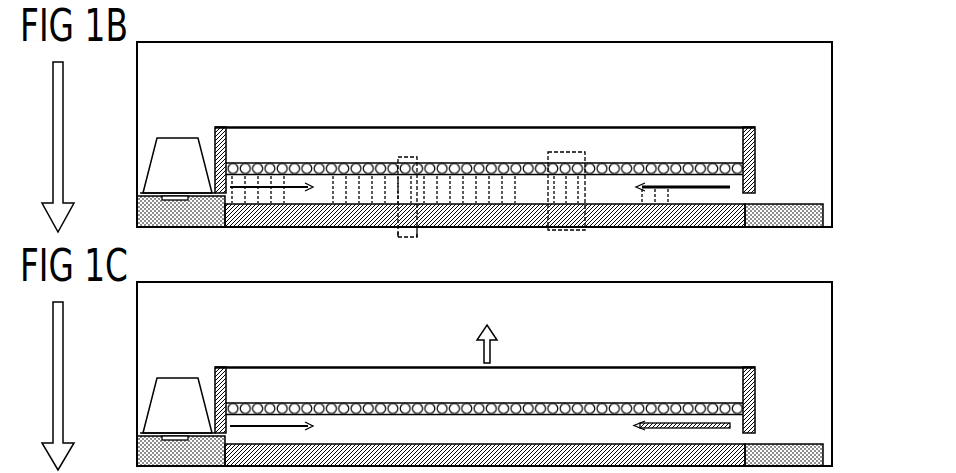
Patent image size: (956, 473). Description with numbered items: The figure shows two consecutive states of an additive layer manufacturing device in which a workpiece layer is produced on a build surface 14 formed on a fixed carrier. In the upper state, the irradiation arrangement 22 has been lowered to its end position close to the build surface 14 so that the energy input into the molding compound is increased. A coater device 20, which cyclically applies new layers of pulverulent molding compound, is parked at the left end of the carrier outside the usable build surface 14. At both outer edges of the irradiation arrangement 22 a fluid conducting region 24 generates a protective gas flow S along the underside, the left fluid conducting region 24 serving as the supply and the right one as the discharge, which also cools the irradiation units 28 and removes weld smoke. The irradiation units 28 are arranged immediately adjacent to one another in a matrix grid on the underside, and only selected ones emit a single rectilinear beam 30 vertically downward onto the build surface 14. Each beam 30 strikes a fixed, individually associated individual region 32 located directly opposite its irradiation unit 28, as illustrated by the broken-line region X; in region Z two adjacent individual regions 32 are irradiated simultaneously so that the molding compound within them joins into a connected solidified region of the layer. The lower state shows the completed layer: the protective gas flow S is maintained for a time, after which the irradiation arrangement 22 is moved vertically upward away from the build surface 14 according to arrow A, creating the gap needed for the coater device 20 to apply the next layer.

In FIG. 1B, the build surface 14 is at (759, 197).
In FIG. 1C, the build surface 14 is at (759, 437).
In FIG. 1B, the coater device 20 is at (181, 150).
In FIG. 1C, the coater device 20 is at (181, 392).
In FIG. 1B, the irradiation arrangement 22 is at (340, 150).
In FIG. 1C, the irradiation arrangement 22 is at (340, 390).
In FIG. 1B, the fluid conducting region 24 is at (221, 130).
In FIG. 1C, the fluid conducting region 24 is at (485, 400).
In FIG. 1B, the irradiation unit 28 is at (414, 160).
In FIG. 1C, the irradiation unit 28 is at (407, 402).
In FIG. 1B, the beam 30 is at (507, 197).
In FIG. 1B, the individual region 32 is at (403, 232).
In FIG. 1B, the protective gas flow S is at (257, 186).
In FIG. 1C, the protective gas flow S is at (257, 425).
In FIG. 1B, the region X is at (403, 156).
In FIG. 1B, the region Z is at (565, 150).
In FIG. 1C, the arrow A is at (499, 353).